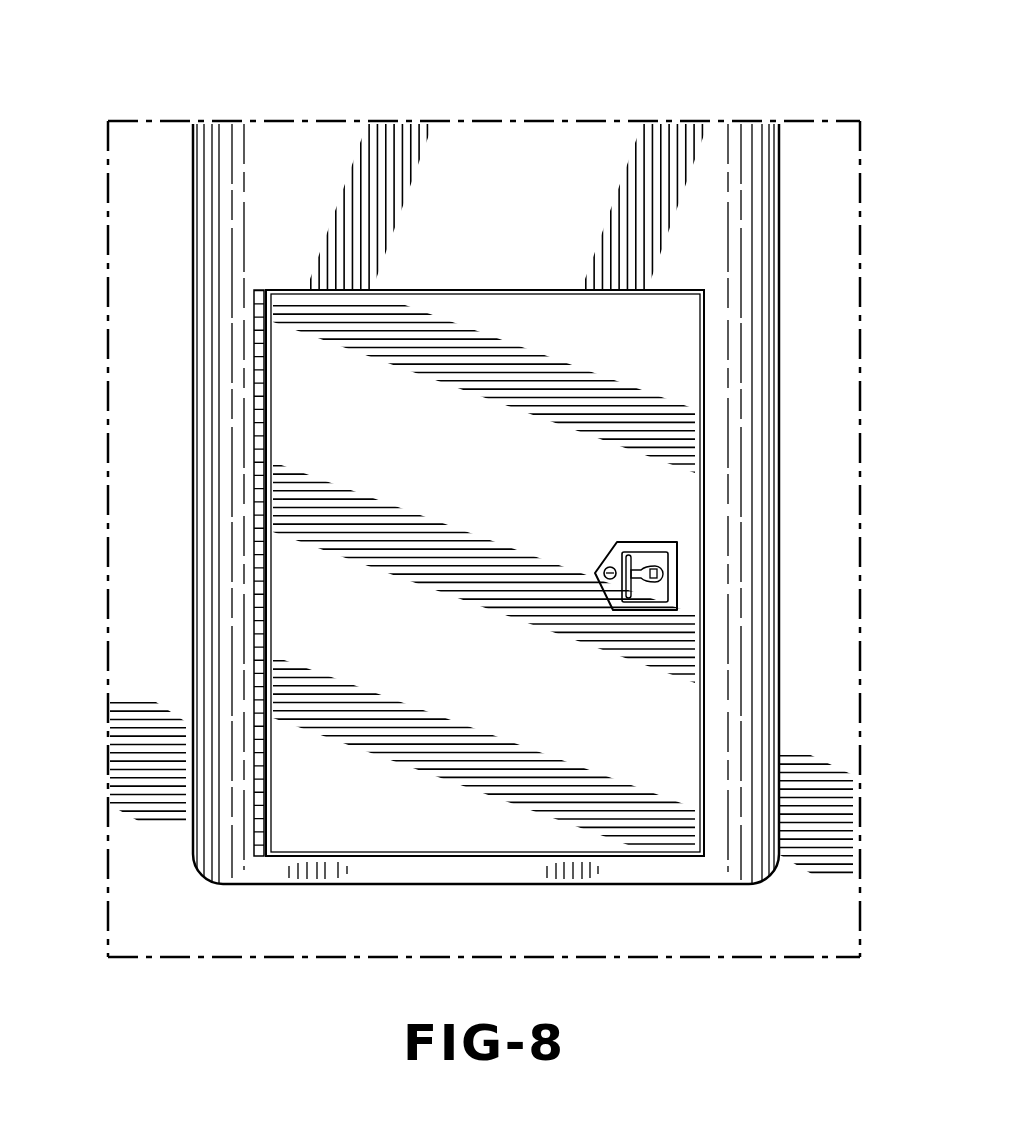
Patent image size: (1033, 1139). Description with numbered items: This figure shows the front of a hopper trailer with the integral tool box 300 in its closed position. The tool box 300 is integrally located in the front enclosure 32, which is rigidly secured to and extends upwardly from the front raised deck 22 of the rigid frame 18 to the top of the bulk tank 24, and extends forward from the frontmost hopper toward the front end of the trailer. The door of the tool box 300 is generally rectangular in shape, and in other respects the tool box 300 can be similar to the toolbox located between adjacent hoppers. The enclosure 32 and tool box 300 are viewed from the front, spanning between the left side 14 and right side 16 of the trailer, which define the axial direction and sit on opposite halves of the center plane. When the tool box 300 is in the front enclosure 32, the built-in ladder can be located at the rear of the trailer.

The left side 14 is at (830, 535).
The right side 16 is at (140, 533).
The rigid frame 18 is at (484, 999).
The front raised deck 22 is at (270, 952).
The bulk tank 24 is at (574, 128).
The front enclosure 32 is at (495, 172).
The integral tool box 300 is at (548, 268).